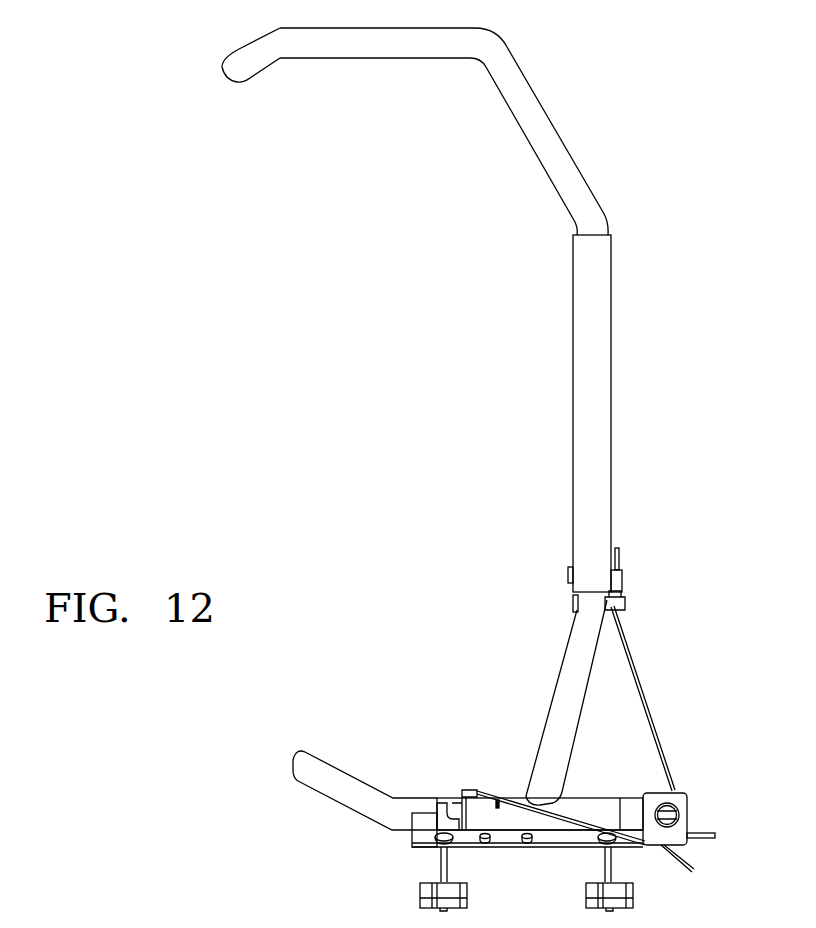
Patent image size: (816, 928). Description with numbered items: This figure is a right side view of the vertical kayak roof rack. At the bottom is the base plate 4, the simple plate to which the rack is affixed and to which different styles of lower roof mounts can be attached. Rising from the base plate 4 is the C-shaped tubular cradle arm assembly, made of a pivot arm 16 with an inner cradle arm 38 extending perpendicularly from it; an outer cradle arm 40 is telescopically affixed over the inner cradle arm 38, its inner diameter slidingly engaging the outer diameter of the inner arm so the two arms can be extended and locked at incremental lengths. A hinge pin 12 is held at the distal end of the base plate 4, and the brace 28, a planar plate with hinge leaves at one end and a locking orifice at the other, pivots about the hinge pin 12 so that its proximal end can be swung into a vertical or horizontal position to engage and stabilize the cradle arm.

The outer cradle arm 40 is at (378, 45).
The inner cradle arm 38 is at (568, 672).
The brace 28 is at (648, 695).
The pivot arm 16 is at (322, 767).
The base plate 4 is at (502, 840).
The hinge pin 12 is at (675, 810).